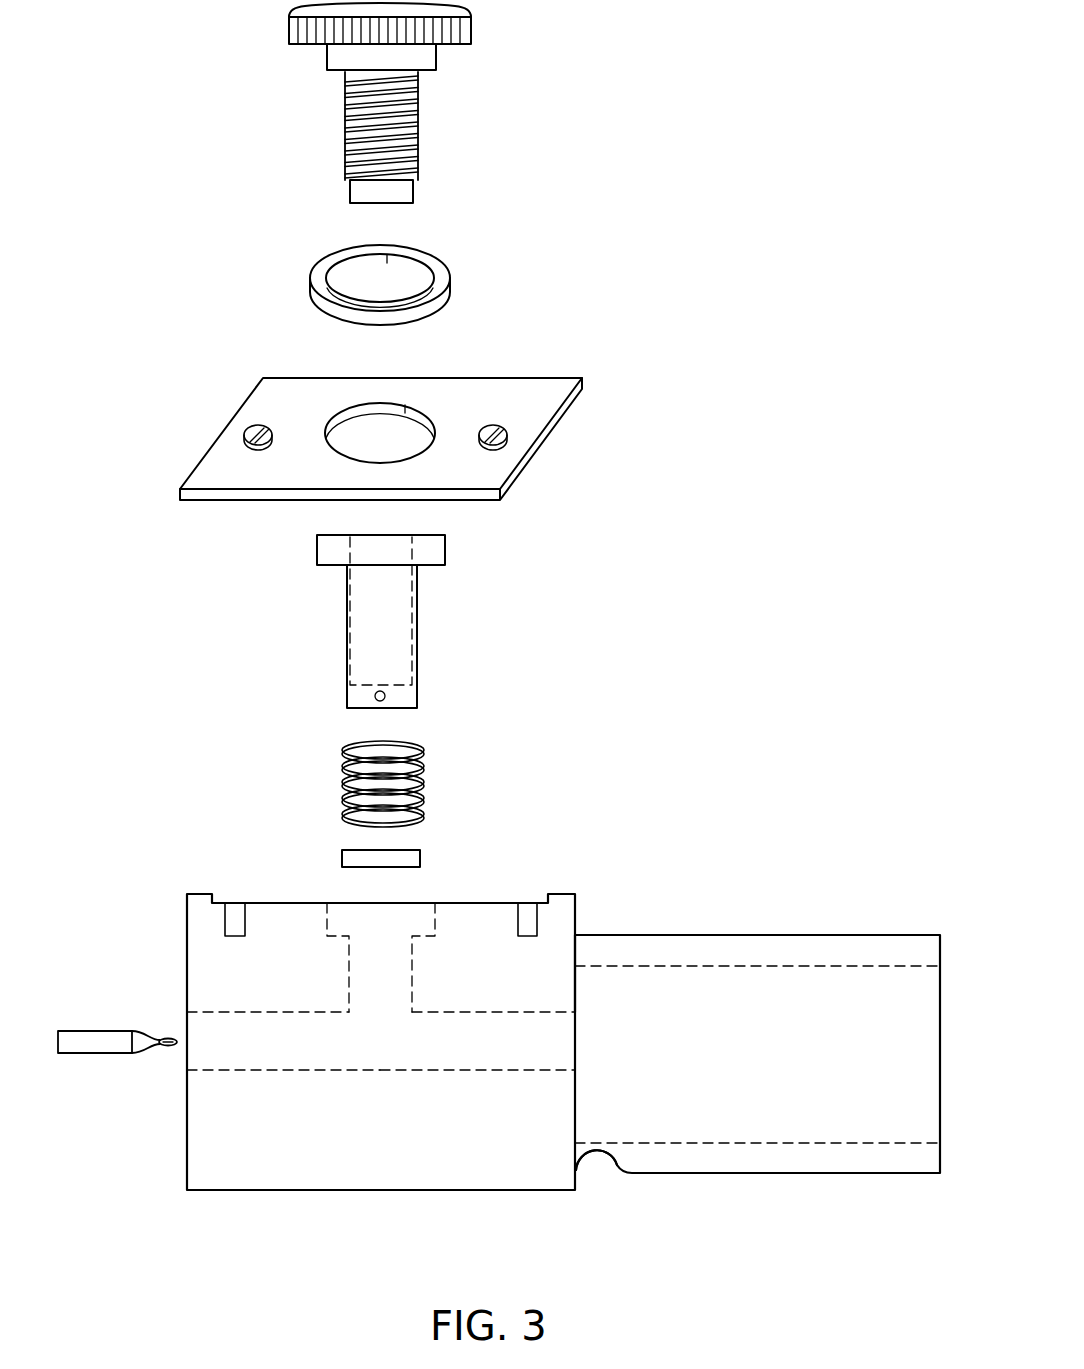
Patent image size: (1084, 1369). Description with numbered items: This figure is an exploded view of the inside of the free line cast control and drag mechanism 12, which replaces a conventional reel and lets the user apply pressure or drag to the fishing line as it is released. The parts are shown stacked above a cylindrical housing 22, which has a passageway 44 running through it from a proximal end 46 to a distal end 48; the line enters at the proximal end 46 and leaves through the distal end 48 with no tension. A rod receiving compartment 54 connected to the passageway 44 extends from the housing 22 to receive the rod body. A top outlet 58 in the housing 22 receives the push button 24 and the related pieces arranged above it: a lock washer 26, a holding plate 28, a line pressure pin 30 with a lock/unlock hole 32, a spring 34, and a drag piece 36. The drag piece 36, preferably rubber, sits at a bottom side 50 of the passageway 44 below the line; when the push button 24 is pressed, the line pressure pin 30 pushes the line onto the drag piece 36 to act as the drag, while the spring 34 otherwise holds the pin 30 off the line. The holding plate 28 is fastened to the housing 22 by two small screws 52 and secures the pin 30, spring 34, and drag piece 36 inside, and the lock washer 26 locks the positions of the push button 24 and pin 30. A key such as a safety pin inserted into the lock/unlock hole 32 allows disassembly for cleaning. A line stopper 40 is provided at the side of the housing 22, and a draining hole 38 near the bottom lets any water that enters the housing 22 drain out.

The free line cast control and drag mechanism 12 is at (187, 937).
The housing 22 is at (380, 1190).
The push button 24 is at (417, 112).
The lock washer 26 is at (450, 285).
The holding plate 28 is at (530, 383).
The line pressure pin 30 is at (418, 625).
The lock/unlock hole 32 is at (388, 697).
The spring 34 is at (428, 782).
The drag piece 36 is at (421, 858).
The draining hole 38 is at (604, 1157).
The line stopper 40 is at (90, 1030).
The passageway 44 is at (245, 1063).
The proximal end 46 is at (187, 1070).
The distal end 48 is at (560, 1034).
The bottom side 50 is at (435, 1063).
The small screws 52 is at (255, 425).
The rod receiving compartment 54 is at (797, 982).
The top outlet 58 is at (370, 930).